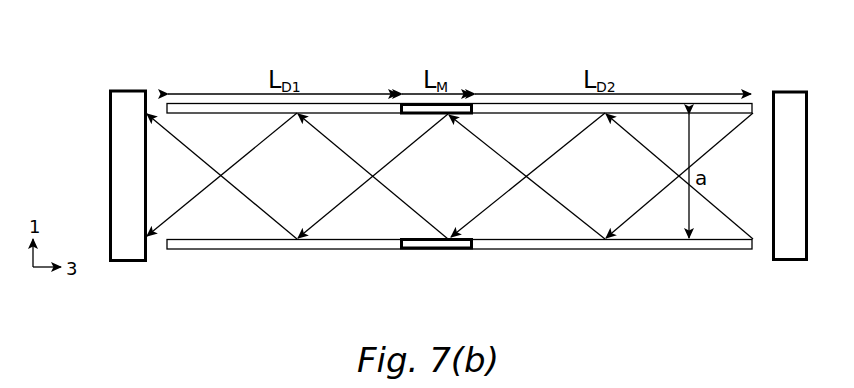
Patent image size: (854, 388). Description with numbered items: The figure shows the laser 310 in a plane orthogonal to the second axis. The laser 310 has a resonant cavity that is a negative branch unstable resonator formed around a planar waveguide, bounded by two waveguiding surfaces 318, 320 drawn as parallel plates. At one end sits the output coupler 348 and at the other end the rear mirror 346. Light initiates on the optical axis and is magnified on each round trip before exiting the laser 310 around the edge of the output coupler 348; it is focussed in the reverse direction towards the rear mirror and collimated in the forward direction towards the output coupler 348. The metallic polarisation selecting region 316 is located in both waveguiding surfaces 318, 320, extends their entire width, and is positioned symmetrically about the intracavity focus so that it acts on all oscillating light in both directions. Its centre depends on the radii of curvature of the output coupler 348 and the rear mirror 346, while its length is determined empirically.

The laser 310 is at (712, 88).
The metallic polarisation selecting region 316 is at (452, 110).
The waveguiding surface 318 is at (346, 123).
The waveguiding surface 320 is at (359, 237).
The rear mirror 346 is at (787, 262).
The output coupler 348 is at (125, 262).